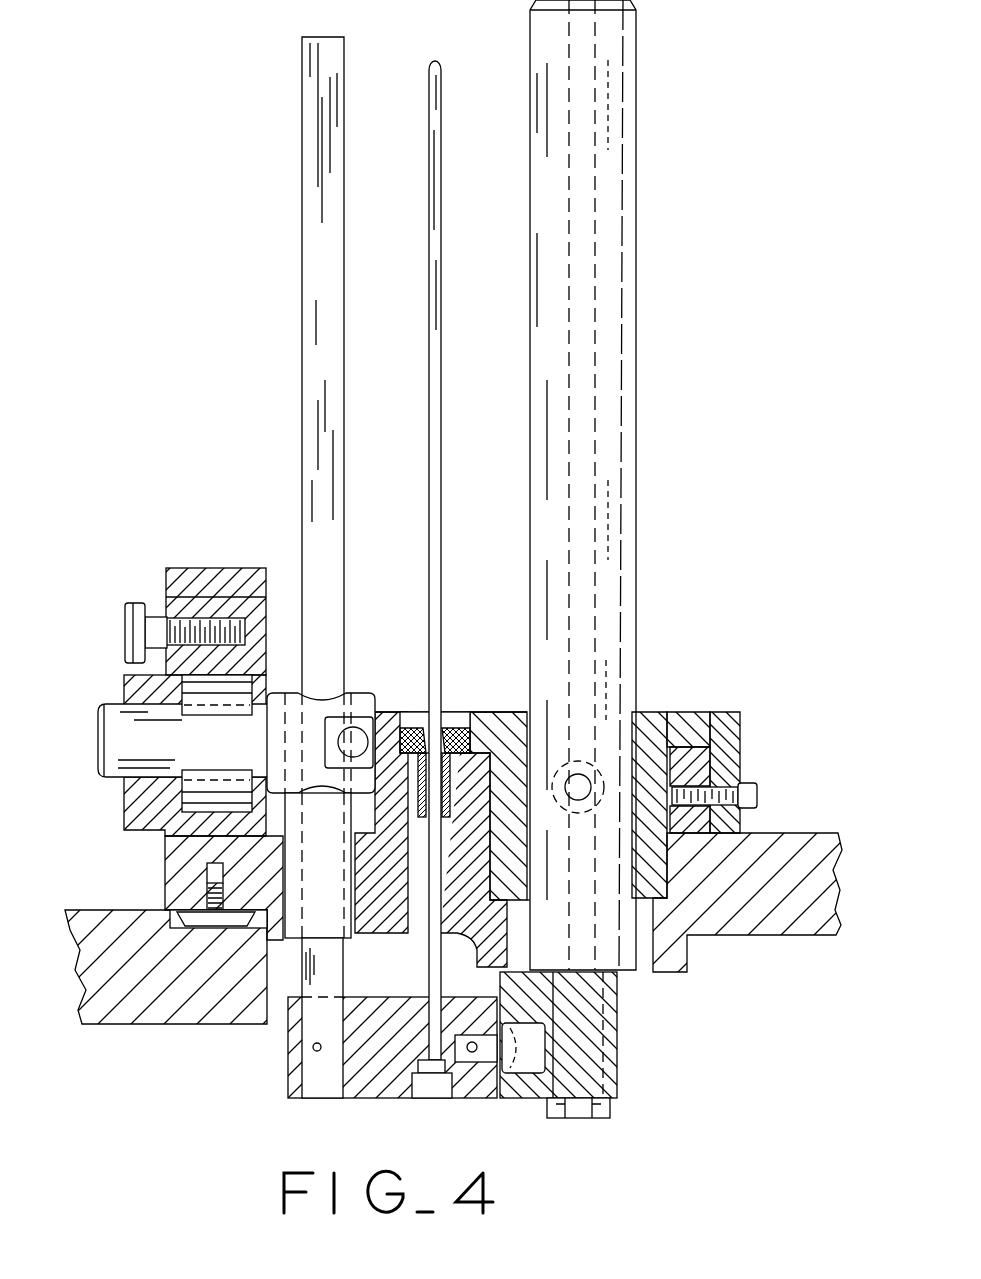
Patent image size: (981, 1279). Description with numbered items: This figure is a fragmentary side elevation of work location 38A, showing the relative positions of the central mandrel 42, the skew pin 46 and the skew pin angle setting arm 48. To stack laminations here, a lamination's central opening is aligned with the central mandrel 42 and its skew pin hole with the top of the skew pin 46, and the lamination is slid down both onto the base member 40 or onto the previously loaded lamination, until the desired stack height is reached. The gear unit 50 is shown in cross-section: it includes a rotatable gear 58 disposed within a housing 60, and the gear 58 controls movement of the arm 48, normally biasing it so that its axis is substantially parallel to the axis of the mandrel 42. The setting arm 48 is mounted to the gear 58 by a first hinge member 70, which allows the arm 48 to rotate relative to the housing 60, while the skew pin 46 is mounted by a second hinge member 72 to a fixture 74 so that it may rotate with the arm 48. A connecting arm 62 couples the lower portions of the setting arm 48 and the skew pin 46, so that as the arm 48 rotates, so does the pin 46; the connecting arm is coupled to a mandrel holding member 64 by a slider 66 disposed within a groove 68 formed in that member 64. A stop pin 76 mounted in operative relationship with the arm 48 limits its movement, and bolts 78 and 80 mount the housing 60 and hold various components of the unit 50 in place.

The work location 38A is at (822, 631).
The base member 40 is at (655, 712).
The central mandrel 42 is at (636, 322).
The skew pin 46 is at (429, 153).
The skew pin angle setting arm 48 is at (302, 142).
The gear unit 50 is at (84, 714).
The rotatable gear 58 is at (135, 817).
The housing 60 is at (112, 787).
The connecting arm 62 is at (372, 1098).
The mandrel holding member 64 is at (615, 1072).
The slider 66 is at (483, 1080).
The groove 68 is at (532, 1067).
The first hinge member 70 is at (370, 694).
The second hinge member 72 is at (446, 726).
The fixture 74 is at (482, 712).
The stop pin 76 is at (386, 712).
The bolt 78 is at (130, 606).
The bolt 80 is at (120, 1018).